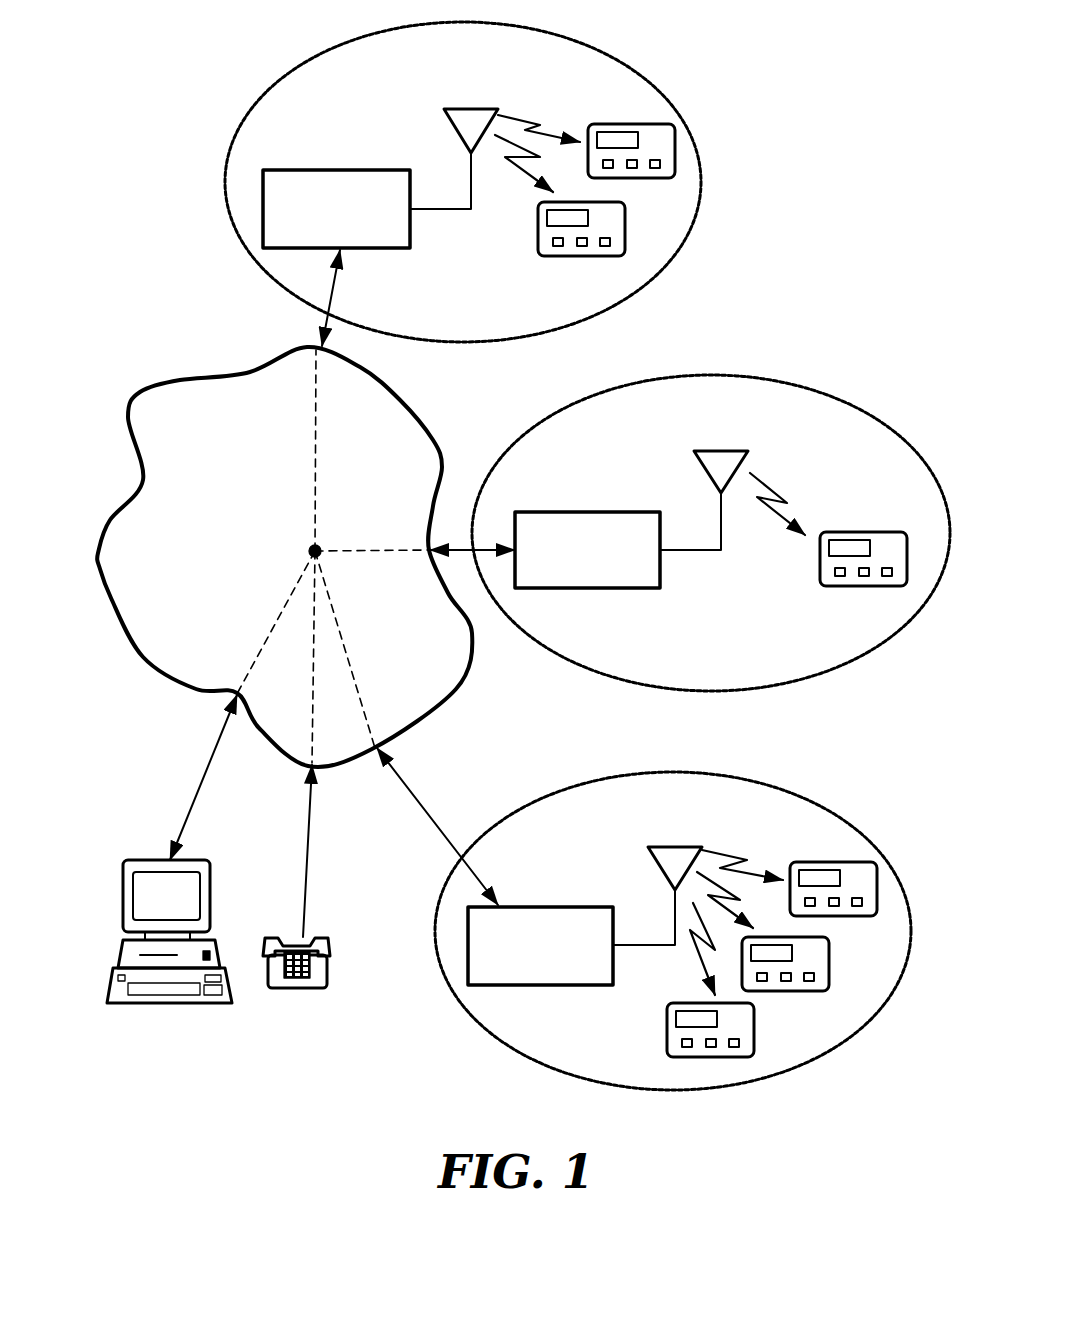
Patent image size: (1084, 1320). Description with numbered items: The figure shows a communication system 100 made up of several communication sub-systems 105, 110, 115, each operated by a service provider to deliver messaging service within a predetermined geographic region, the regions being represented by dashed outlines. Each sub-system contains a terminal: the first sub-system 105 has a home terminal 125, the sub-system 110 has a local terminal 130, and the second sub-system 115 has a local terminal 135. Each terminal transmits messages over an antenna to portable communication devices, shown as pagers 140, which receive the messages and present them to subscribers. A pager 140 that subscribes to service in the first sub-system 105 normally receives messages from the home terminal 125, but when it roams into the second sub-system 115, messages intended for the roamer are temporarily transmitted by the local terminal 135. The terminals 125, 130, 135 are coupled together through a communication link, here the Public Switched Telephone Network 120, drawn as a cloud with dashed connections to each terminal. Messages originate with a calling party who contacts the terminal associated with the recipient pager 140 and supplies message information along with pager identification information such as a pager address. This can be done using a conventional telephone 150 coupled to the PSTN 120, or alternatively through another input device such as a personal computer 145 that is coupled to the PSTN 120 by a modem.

The communication system 100 is at (652, 1155).
The first communication sub-system 105 is at (395, 55).
The communication sub-system 110 is at (630, 412).
The second communication sub-system 115 is at (650, 788).
The Public Switched Telephone Network (PSTN) 120 is at (272, 388).
The home terminal 125 is at (318, 170).
The local terminal 130 is at (567, 510).
The local terminal 135 is at (532, 907).
The pager 140 is at (637, 124).
The personal computer 145 is at (168, 1003).
The telephone 150 is at (298, 988).